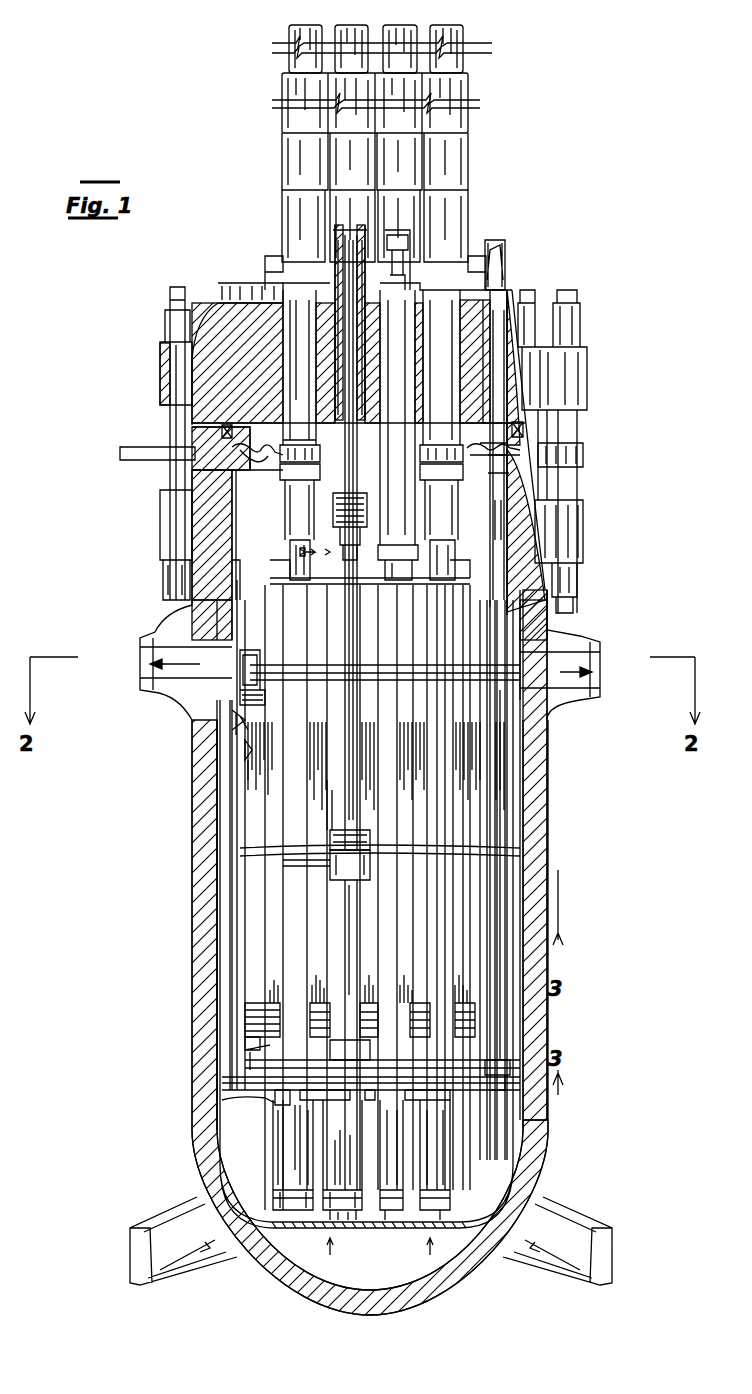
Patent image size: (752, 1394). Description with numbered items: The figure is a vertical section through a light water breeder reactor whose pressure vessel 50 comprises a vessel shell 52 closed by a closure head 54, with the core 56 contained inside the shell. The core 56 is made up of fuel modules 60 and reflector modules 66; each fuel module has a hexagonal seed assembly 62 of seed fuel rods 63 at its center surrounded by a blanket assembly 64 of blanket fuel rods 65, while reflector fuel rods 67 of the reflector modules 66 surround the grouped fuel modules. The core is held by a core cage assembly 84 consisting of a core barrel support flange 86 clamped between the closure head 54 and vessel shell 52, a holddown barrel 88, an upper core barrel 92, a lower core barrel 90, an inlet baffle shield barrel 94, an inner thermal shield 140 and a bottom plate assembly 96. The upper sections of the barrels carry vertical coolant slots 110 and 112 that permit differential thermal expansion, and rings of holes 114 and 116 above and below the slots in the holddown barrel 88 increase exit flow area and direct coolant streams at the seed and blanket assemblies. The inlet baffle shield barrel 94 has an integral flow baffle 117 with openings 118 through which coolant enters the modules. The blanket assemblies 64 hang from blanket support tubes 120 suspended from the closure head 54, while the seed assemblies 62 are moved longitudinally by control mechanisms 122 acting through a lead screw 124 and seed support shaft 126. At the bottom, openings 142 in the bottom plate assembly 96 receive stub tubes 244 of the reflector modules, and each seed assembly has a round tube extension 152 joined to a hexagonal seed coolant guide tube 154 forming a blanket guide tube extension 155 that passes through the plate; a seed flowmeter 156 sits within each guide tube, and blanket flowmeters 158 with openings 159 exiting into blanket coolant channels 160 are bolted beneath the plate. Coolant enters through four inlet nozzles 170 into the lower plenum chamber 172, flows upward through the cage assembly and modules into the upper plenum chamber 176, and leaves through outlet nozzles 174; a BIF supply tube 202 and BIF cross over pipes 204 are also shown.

The pressure vessel 50 is at (503, 215).
The vessel shell 52 is at (535, 927).
The closure head 54 is at (512, 290).
The core 56 is at (462, 833).
The fuel modules 60 is at (447, 743).
The seed assemblies 62 is at (358, 959).
The seed fuel rods 63 is at (350, 1095).
The blanket assemblies 64 is at (330, 858).
The blanket fuel rods 65 is at (370, 727).
The reflector modules 66 is at (255, 772).
The reflector fuel rods 67 is at (245, 735).
The core cage assembly 84 is at (495, 887).
The core barrel support flange 86 is at (530, 435).
The holddown barrel 88 is at (490, 522).
The lower core barrel 90 is at (232, 905).
The upper core barrel 92 is at (535, 538).
The inlet baffle shield barrel 94 is at (217, 930).
The bottom plate assembly 96 is at (235, 1058).
The vertical coolant slots 110 is at (240, 520).
The vertical coolant slots 112 is at (250, 530).
The holes 114 is at (197, 612).
The holes 116 is at (250, 452).
The flow baffle 117 is at (412, 1225).
The openings 118 is at (365, 1205).
The blanket support tubes 120 is at (395, 618).
The control mechanism 122 is at (455, 30).
The lead screw 124 is at (345, 325).
The seed support shaft 126 is at (350, 600).
The inner thermal shield 140 is at (290, 878).
The openings 142 is at (235, 1075).
The round tube extension 152 is at (290, 1105).
The seed coolant guide tube 154 is at (288, 1167).
The blanket guide tube extension 155 is at (300, 1120).
The seed flowmeter 156 is at (332, 1200).
The blanket flowmeters 158 is at (440, 1105).
The openings 159 is at (420, 1110).
The blanket coolant channels 160 is at (275, 1103).
The inlet nozzles 170 is at (575, 1235).
The lower plenum chamber 172 is at (390, 1295).
The outlet nozzles 174 is at (585, 648).
The upper plenum chamber 176 is at (193, 587).
The BIF supply tube 202 is at (397, 780).
The BIF cross over pipes 204 is at (505, 447).
The stub tubes 244 is at (245, 1045).